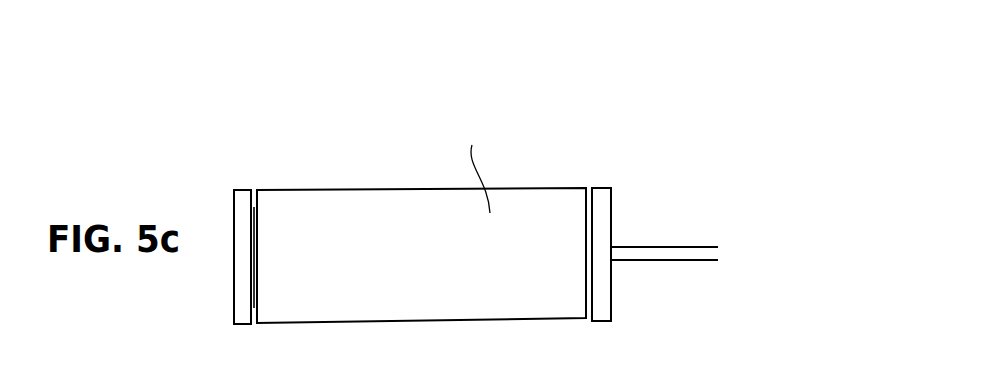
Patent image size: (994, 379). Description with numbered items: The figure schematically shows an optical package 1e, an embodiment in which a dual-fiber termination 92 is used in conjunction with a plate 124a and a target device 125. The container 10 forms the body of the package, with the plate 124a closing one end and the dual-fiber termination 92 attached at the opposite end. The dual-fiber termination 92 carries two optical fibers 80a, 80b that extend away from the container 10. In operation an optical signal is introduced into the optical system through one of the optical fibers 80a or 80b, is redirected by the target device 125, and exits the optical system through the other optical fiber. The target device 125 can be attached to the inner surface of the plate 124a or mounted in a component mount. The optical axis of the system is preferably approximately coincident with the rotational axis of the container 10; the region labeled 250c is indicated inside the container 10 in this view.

The optical package 1e is at (275, 123).
The plate 124a is at (240, 190).
The target device 125 is at (254, 272).
The container 10 is at (387, 190).
The casing 250c is at (471, 165).
The dual-fiber termination 92 is at (723, 180).
The optical fiber 80a is at (687, 245).
The optical fiber 80b is at (660, 262).